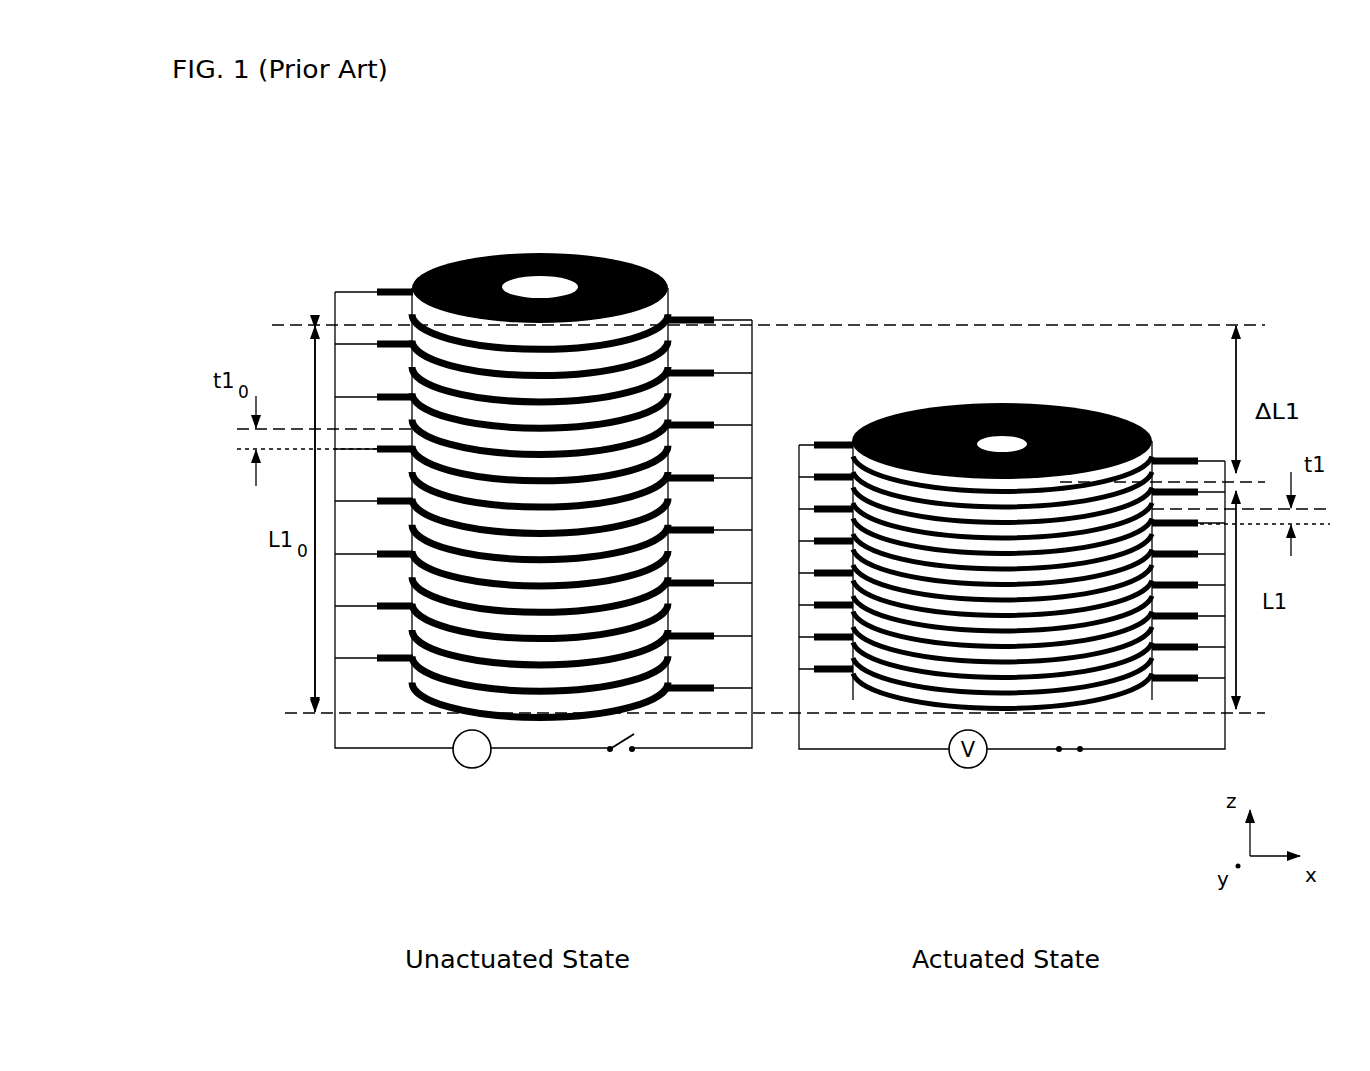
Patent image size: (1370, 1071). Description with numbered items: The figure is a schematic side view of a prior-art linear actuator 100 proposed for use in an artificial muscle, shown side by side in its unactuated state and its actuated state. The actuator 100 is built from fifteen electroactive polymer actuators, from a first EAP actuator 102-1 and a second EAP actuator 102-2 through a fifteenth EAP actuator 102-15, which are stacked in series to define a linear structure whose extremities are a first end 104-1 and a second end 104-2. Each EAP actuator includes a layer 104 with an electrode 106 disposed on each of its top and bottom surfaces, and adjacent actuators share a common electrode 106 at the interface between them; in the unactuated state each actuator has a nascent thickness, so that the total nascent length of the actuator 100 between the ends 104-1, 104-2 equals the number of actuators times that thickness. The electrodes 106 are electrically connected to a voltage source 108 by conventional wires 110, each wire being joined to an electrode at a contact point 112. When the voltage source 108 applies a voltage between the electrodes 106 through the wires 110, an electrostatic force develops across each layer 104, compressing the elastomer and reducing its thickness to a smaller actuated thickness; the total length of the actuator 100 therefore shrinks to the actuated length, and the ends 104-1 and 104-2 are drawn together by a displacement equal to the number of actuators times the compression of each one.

The actuator 100 is at (272, 216).
The electroactive polymer actuator 102-1 is at (678, 300).
The electroactive polymer actuator 102-2 is at (400, 328).
The electroactive polymer actuator 102-15 is at (402, 682).
The layer 104 is at (633, 378).
The end 104-1 is at (558, 212).
The end 104-2 is at (541, 730).
The electrode 106 is at (477, 258).
The voltage source 108 is at (472, 768).
The wires 110 is at (335, 730).
The contact point 112 is at (712, 470).